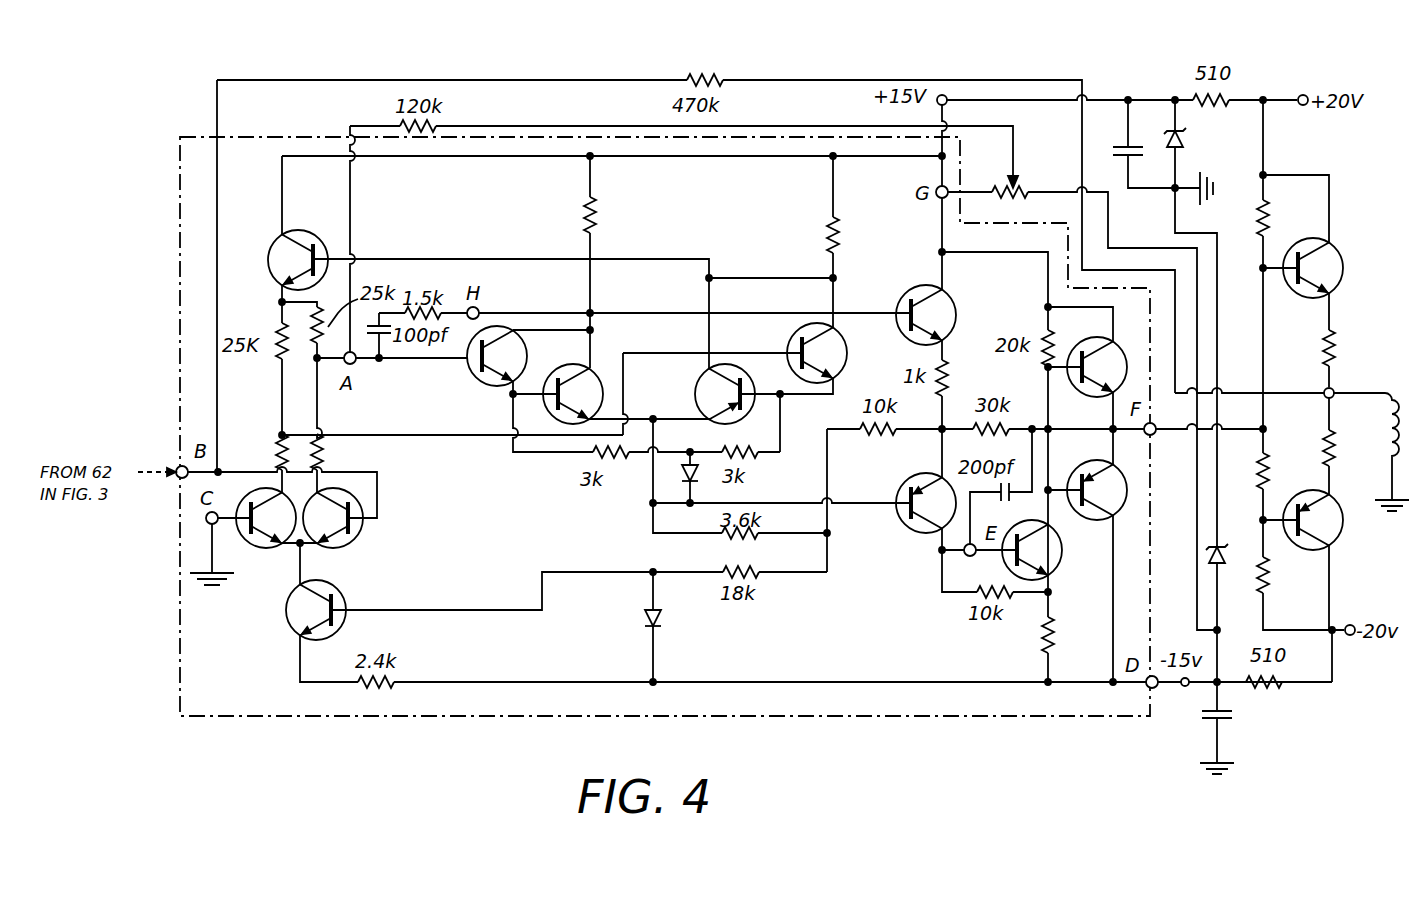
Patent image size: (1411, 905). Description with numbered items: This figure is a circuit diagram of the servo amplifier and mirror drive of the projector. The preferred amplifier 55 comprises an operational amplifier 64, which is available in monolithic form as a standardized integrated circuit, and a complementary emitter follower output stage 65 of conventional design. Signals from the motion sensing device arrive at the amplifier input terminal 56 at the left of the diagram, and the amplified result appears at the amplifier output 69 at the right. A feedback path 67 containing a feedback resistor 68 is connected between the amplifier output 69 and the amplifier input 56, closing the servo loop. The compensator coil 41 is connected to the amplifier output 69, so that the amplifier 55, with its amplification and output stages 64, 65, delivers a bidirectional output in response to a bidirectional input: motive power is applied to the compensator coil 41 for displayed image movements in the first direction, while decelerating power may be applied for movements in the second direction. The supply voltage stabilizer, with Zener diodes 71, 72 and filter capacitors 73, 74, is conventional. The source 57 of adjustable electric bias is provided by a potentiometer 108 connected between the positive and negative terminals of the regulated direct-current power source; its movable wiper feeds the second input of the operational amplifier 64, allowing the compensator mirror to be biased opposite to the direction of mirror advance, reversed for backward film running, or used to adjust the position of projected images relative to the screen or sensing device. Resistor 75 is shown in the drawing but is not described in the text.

The feedback path 67 is at (211, 110).
The feedback resistor 68 is at (726, 78).
The amplifier input terminal 56 is at (180, 466).
The source of adjustable electric bias 57 is at (1005, 173).
The potentiometer 108 is at (1013, 178).
The operational amplifier 64 is at (737, 215).
The filter capacitor 73 is at (1126, 142).
The Zener diode 71 is at (1183, 138).
The complementary emitter follower output stage 65 is at (1318, 383).
The amplifier output 69 is at (1332, 389).
The compensator coil 41 is at (1388, 416).
The amplifier 55 is at (1284, 484).
The Zener diode 72 is at (1217, 570).
The filter capacitor 74 is at (1230, 722).
The resistor 75 is at (1063, 649).